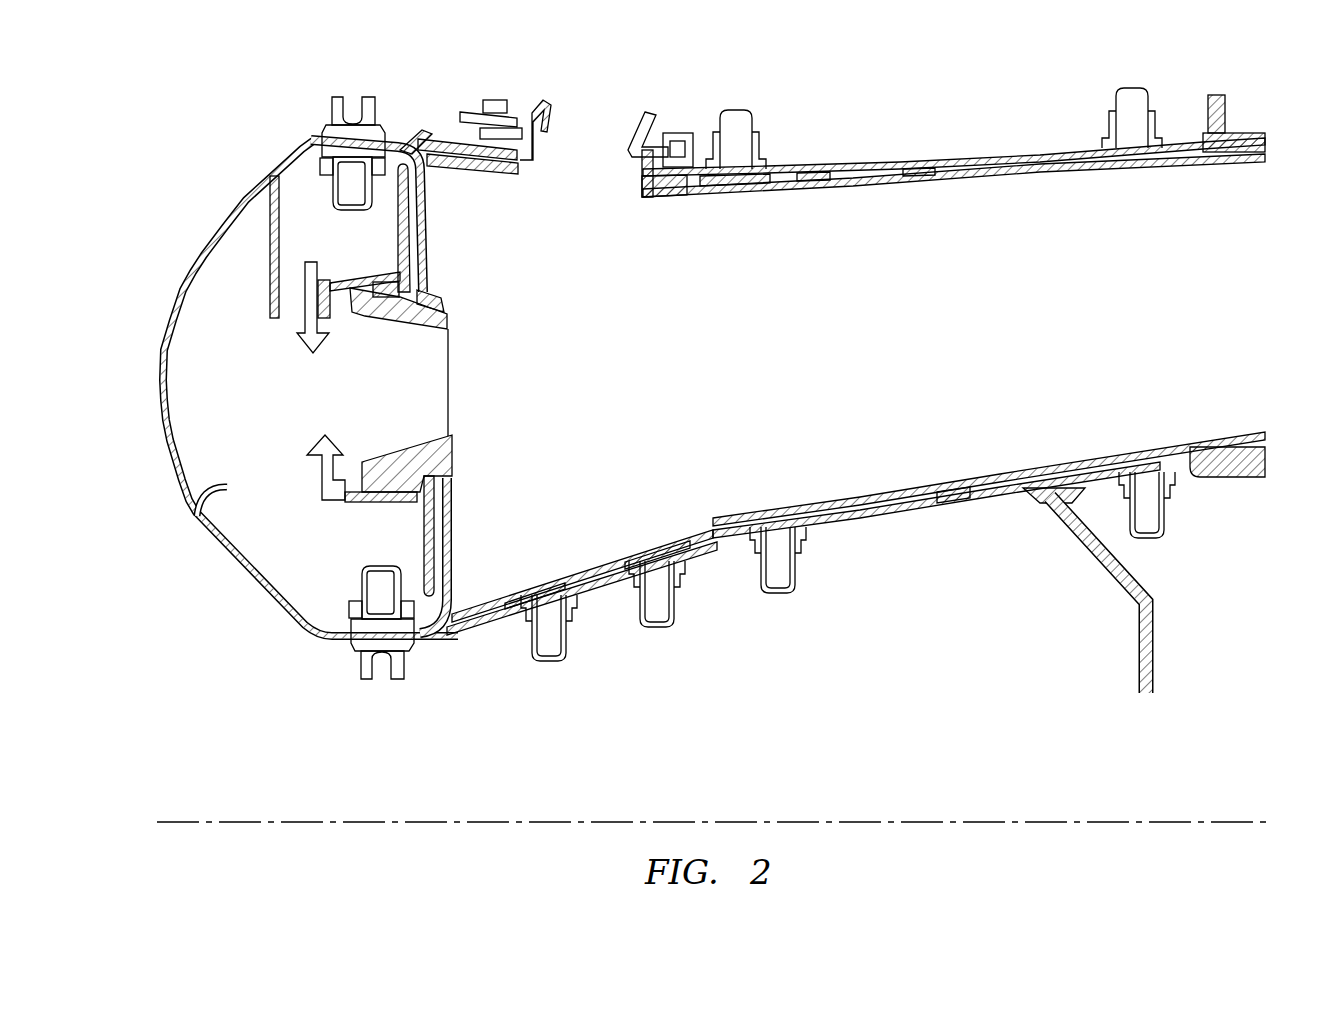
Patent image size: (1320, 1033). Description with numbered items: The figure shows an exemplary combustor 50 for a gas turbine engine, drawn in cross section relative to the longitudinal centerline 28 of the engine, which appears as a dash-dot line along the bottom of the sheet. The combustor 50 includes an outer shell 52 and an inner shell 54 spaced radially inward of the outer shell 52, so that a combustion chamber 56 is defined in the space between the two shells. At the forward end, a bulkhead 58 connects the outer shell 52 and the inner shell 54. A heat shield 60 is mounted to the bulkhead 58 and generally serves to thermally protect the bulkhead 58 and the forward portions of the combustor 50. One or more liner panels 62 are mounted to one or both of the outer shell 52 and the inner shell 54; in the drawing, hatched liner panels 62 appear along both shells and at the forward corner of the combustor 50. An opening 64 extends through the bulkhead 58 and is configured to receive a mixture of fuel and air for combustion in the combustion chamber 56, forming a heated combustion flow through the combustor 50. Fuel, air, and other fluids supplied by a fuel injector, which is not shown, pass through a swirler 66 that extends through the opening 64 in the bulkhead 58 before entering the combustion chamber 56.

The longitudinal centerline 28 is at (717, 772).
The combustor 50 is at (714, 350).
The outer shell 52 is at (970, 155).
The inner shell 54 is at (967, 503).
The combustion chamber 56 is at (928, 333).
The bulkhead 58 is at (398, 219).
The heat shield 60 is at (428, 206).
The liner panel 62 is at (471, 174).
The opening 64 is at (434, 380).
The swirler 66 is at (452, 324).